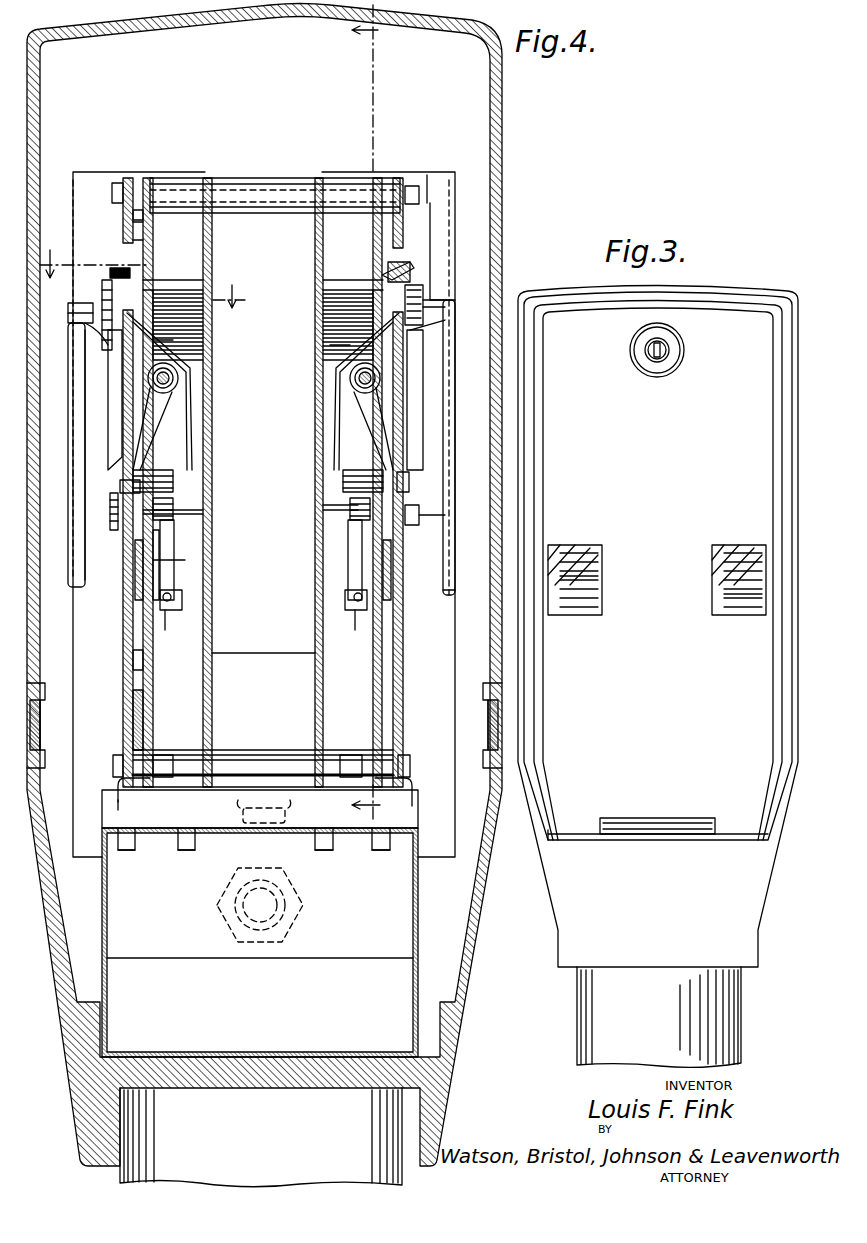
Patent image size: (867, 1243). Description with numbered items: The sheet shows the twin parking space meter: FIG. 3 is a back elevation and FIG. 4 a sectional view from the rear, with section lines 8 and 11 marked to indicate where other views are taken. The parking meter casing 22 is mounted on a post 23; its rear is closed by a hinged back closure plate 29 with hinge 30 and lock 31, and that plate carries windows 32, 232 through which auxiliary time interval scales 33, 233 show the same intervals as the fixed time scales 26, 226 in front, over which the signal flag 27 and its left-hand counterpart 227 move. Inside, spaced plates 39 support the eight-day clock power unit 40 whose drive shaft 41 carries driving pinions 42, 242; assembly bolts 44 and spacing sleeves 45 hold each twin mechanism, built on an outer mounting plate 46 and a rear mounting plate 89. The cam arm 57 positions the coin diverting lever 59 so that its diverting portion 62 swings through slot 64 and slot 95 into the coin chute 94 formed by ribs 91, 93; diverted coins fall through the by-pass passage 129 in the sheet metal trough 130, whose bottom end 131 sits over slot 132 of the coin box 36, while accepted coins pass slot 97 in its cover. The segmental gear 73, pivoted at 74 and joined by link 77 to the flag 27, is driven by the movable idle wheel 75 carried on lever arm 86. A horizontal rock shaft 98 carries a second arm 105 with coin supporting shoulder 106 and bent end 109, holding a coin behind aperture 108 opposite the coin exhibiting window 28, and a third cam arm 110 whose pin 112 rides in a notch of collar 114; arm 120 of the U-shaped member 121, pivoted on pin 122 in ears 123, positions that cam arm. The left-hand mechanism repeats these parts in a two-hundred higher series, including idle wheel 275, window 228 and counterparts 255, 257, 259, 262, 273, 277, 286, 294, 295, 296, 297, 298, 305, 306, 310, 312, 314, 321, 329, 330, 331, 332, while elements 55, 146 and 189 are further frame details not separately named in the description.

In FIG. 4, the section line 8- 8 is at (143, 269).
In FIG. 4, the section line 11- 11 is at (381, 417).
In FIG. 4, the parking meter casing 22 is at (503, 92).
In FIG. 3, the parking meter casing 22 is at (715, 292).
In FIG. 4, the standard or post 23 is at (261, 1137).
In FIG. 3, the standard or post 23 is at (659, 1017).
In FIG. 4, the fixed time scale 26 is at (73, 175).
In FIG. 4, the shutter or signal flag 27 is at (84, 452).
In FIG. 4, the coin exhibiting window 28 is at (55, 690).
In FIG. 3, the back closure plate 29 is at (552, 797).
In FIG. 3, the hinge 30 is at (618, 837).
In FIG. 3, the latch or lock 31 is at (672, 350).
In FIG. 3, the window 32 is at (584, 547).
In FIG. 3, the auxiliary time interval scale or shutter 33 is at (600, 576).
In FIG. 4, the coin receptacle 36 is at (419, 932).
In FIG. 4, the spaced apart plates 39 is at (208, 178).
In FIG. 4, the power unit 40 is at (233, 643).
In FIG. 4, the drive shaft 41 is at (180, 490).
In FIG. 4, the driving pinion 42 is at (170, 520).
In FIG. 4, the assembly bolts 44 is at (115, 185).
In FIG. 4, the spacing sleeves 45 is at (180, 182).
In FIG. 4, the outer mounting plate 46 is at (128, 178).
In FIG. 4, the rack 55 is at (110, 500).
In FIG. 4, the cam arm 57 is at (90, 350).
In FIG. 4, the coin diverting lever 59 is at (110, 275).
In FIG. 4, the coin diverting portion 62 is at (108, 280).
In FIG. 4, the slot 64 is at (125, 245).
In FIG. 4, the segmental gear 73 is at (130, 590).
In FIG. 4, the pivot 74 is at (135, 555).
In FIG. 4, the movable idle wheel 75 is at (165, 470).
In FIG. 4, the link 77 is at (108, 392).
In FIG. 4, the lever arm 86 is at (120, 485).
In FIG. 4, the rear mounting plate 89 is at (148, 178).
In FIG. 4, the rib 91 is at (145, 220).
In FIG. 4, the rib 93 is at (133, 660).
In FIG. 4, the coin chute or passage 94 is at (125, 228).
In FIG. 4, the slot 95 is at (160, 287).
In FIG. 4, the slot 97 is at (127, 852).
In FIG. 4, the rock shaft 98 is at (178, 370).
In FIG. 4, the second arm 105 is at (160, 775).
In FIG. 4, the coin supporting shoulder 106 is at (116, 765).
In FIG. 4, the aperture 108 is at (133, 705).
In FIG. 4, the end of arm 109 is at (117, 802).
In FIG. 4, the cam arm 110 is at (160, 418).
In FIG. 4, the projecting pin 112 is at (195, 352).
In FIG. 4, the collar 114 is at (178, 384).
In FIG. 4, the arm 120 is at (174, 548).
In FIG. 4, the U-shaped member 121 is at (170, 625).
In FIG. 4, the pin 122 is at (182, 604).
In FIG. 4, the ears 123 is at (172, 597).
In FIG. 4, the coin by-pass passage 129 is at (178, 563).
In FIG. 4, the sheet metal trough 130 is at (213, 290).
In FIG. 4, the bottom end 131 is at (190, 797).
In FIG. 4, the opening or slot 132 is at (187, 852).
In FIG. 4, the bolt 146 is at (412, 186).
In FIG. 4, the column 189 is at (378, 178).
In FIG. 4, the fixed time scale 226 is at (455, 190).
In FIG. 4, the plate 227 is at (462, 595).
In FIG. 4, the bracket 228 is at (483, 712).
In FIG. 3, the window 232 is at (735, 547).
In FIG. 3, the auxiliary time interval scale or shutter 233 is at (722, 594).
In FIG. 4, the driving pinion 242 is at (330, 505).
In FIG. 4, the rack 255 is at (412, 525).
In FIG. 4, the bar 257 is at (445, 325).
In FIG. 4, the rack 259 is at (425, 300).
In FIG. 4, the pawl 262 is at (405, 270).
In FIG. 4, the rod 273 is at (393, 580).
In FIG. 4, the movable idle wheel 275 is at (343, 480).
In FIG. 4, the plate 277 is at (395, 410).
In FIG. 4, the bearing 286 is at (385, 490).
In FIG. 4, the plate 294 is at (430, 225).
In FIG. 4, the cross piece 295 is at (340, 302).
In FIG. 4, the hook 296 is at (412, 795).
In FIG. 4, the notch 297 is at (382, 852).
In FIG. 4, the bar 298 is at (345, 384).
In FIG. 4, the bracket 305 is at (340, 770).
In FIG. 4, the bracket 306 is at (405, 770).
In FIG. 4, the belt 310 is at (336, 418).
In FIG. 4, the hanger 312 is at (331, 362).
In FIG. 4, the pulley 314 is at (350, 372).
In FIG. 4, the pin 321 is at (352, 618).
In FIG. 4, the lever 329 is at (340, 590).
In FIG. 4, the spring housing 330 is at (320, 290).
In FIG. 4, the bracket 331 is at (320, 797).
In FIG. 4, the notch 332 is at (324, 852).